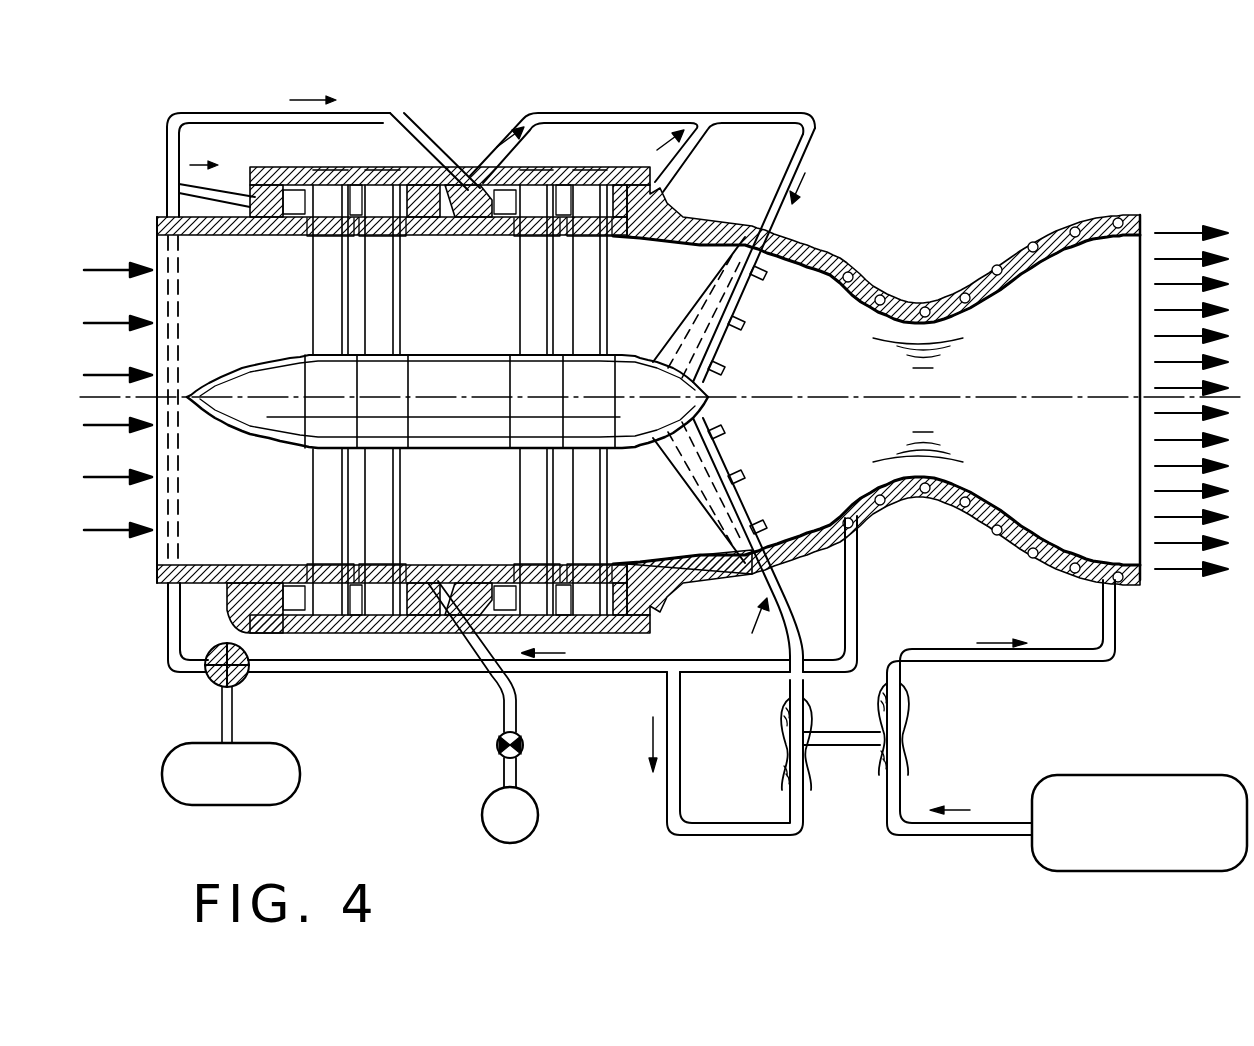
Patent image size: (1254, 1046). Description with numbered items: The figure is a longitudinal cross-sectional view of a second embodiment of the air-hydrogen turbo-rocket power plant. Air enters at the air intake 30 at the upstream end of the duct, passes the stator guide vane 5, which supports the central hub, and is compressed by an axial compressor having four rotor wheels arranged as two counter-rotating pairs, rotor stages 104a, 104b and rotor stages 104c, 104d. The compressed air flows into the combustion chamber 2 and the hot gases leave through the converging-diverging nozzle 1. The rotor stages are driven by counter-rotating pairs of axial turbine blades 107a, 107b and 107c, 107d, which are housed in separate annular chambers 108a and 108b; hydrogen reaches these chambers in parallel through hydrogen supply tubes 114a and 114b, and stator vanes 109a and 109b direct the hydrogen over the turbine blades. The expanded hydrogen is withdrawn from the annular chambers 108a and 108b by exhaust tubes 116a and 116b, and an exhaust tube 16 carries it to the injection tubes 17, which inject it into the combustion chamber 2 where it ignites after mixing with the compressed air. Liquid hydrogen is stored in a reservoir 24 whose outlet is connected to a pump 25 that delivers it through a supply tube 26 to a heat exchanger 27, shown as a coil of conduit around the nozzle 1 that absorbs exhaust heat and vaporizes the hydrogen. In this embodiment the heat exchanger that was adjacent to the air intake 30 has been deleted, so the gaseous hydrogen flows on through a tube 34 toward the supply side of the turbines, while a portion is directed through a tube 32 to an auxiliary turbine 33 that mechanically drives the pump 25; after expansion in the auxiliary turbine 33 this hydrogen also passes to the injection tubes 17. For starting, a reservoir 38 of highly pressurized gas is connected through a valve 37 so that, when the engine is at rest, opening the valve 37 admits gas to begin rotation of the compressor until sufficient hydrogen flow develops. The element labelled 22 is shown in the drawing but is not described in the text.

The converging-diverging nozzle 1 is at (1092, 262).
The combustion chamber 2 is at (795, 280).
The stator guide vane 5 is at (225, 497).
The exhaust tube 16 is at (812, 152).
The injection tubes 17 is at (722, 337).
The fuel pump 22 is at (495, 830).
The reservoir 24 is at (1117, 840).
The pump 25 is at (497, 745).
The supply tube 26 is at (1115, 648).
The heat exchanger 27 is at (963, 500).
The air intake 30 is at (157, 250).
The tube 32 is at (667, 795).
The auxiliary turbine 33 is at (790, 750).
The tube 34 is at (165, 622).
The valve 37 is at (215, 645).
The reservoir 38 is at (213, 789).
The rotor stage 104a is at (377, 248).
The rotor stage 104b is at (372, 286).
The rotor stage 104c is at (530, 318).
The rotor stage 104d is at (583, 296).
The axial turbine blades 107a is at (340, 175).
The axial turbine blades 107b is at (382, 183).
The axial turbine blades 107c is at (533, 183).
The axial turbine blades 107d is at (592, 183).
The annular chamber 108a is at (283, 180).
The annular chamber 108b is at (563, 190).
The stator vane 109a is at (290, 212).
The stator vane 109b is at (474, 162).
The hydrogen supply tube 114a is at (227, 182).
The hydrogen supply tube 114b is at (185, 110).
The exhaust tube 116a is at (690, 113).
The exhaust tube 116b is at (697, 153).